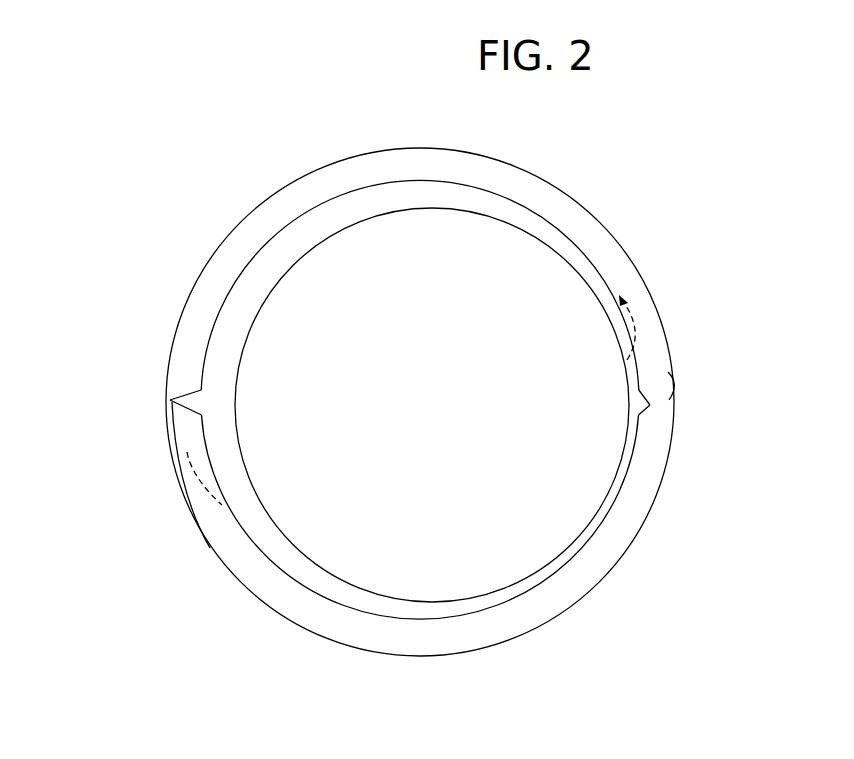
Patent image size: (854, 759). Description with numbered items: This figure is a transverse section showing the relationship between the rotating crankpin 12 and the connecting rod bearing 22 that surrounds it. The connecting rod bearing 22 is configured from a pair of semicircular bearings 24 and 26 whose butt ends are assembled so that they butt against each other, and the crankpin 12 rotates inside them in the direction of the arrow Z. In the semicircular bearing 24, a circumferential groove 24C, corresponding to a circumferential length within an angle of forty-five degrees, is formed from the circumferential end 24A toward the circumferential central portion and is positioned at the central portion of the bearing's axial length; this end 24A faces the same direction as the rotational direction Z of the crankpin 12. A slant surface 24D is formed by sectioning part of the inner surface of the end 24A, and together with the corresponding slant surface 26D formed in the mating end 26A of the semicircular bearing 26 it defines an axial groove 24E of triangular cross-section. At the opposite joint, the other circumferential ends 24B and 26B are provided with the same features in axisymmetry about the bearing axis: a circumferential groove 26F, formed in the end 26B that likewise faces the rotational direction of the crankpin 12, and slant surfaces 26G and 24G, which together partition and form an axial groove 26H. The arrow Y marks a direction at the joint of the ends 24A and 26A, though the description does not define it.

The connecting rod bearing 22 is at (334, 146).
The crankpin 12 is at (327, 257).
The semicircular bearing 24 is at (586, 226).
The semicircular bearing 26 is at (427, 643).
The rotational direction of the crankpin Z is at (569, 302).
The circumferential end 26B is at (163, 382).
The slant surface 24G is at (170, 405).
The axial groove 26H is at (173, 399).
The circumferential groove 26F is at (187, 452).
The circumferential end 24B is at (168, 452).
The slant surface 26G is at (173, 487).
The circumferential groove 24C is at (627, 360).
The axial groove 24E is at (626, 404).
The slant surface 24D is at (668, 382).
The circumferential end 26A is at (672, 388).
The direction arrow Y is at (694, 383).
The circumferential end 24A is at (665, 421).
The slant surface 26D is at (645, 422).